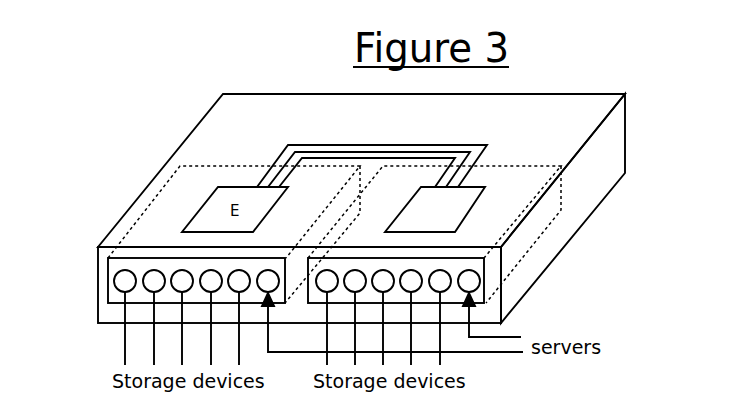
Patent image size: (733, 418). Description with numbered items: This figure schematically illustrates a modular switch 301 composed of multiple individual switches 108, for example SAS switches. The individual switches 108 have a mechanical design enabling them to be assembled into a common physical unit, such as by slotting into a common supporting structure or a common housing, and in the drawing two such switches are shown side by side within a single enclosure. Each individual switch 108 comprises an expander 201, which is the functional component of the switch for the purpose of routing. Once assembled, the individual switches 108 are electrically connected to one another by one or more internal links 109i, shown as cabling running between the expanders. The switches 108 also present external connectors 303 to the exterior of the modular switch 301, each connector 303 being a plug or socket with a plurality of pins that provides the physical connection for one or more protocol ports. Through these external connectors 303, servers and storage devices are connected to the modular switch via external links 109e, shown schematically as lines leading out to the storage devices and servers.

The modular switch 301 is at (628, 135).
The individual switch 108 is at (508, 165).
The expander 201 is at (473, 210).
The internal link 109i is at (346, 145).
The external link 109e is at (125, 353).
The external connector 303 is at (178, 268).